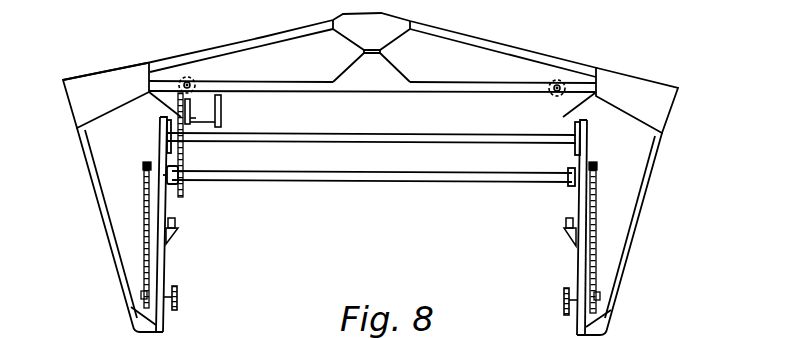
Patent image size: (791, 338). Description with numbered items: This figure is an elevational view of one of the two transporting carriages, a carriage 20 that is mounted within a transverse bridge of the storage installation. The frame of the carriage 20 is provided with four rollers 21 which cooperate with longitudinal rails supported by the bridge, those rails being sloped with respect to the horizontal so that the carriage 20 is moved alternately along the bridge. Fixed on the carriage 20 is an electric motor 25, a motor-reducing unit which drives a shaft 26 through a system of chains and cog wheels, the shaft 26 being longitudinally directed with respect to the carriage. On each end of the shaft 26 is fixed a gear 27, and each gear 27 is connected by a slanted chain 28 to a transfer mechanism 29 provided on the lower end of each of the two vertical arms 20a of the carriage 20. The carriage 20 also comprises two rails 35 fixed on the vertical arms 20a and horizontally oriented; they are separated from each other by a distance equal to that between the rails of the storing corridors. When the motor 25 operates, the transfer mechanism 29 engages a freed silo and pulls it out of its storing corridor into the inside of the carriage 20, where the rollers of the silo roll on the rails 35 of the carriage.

The carriage 20 is at (527, 42).
The vertical arms 20a is at (158, 259).
The rollers 21 is at (195, 77).
The electric motor 25 is at (203, 110).
The shaft 26 is at (284, 174).
The gear 27 is at (145, 165).
The slanted chain 28 is at (143, 213).
The transfer mechanism 29 is at (183, 292).
The rails 35 is at (174, 223).